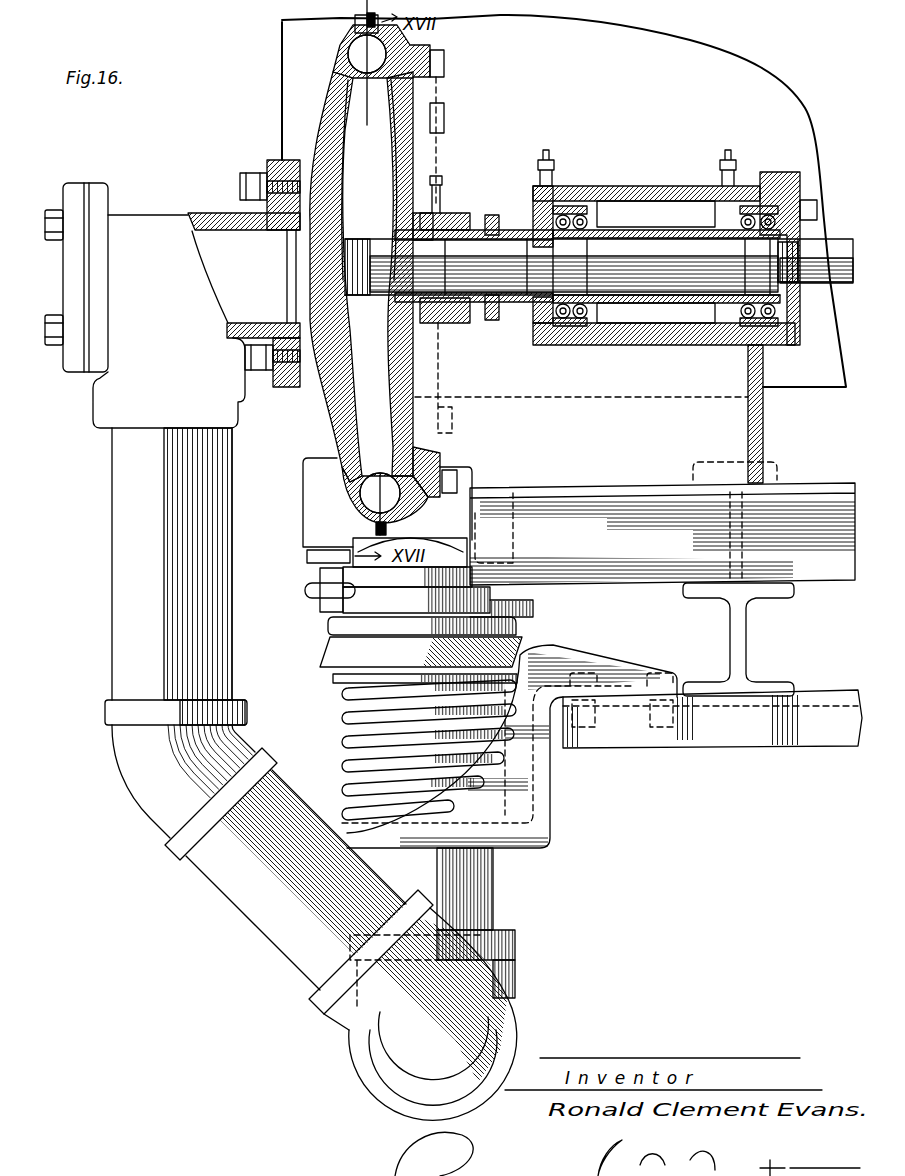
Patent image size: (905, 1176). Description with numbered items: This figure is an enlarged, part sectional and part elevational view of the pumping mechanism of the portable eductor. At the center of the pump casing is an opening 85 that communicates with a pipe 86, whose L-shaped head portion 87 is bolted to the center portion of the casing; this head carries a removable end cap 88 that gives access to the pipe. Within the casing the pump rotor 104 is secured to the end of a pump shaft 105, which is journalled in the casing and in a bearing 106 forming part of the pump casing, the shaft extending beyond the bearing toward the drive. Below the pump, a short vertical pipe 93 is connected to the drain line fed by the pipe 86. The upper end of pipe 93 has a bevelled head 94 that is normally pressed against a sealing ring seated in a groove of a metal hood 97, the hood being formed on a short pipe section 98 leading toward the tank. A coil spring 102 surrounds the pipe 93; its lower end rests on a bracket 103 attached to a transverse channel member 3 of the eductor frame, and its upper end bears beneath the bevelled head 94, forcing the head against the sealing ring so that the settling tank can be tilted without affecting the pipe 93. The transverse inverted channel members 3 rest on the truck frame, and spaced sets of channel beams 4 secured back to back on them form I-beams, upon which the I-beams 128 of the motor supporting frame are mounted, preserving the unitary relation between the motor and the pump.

The removable end cap 88 is at (75, 192).
The L-shaped head portion 87 is at (218, 217).
The opening 85 is at (300, 273).
The pipe 86 is at (133, 510).
The pump rotor 104 is at (385, 163).
The bearing 106 is at (650, 186).
The pump shaft 105 is at (494, 290).
The I-beams 128 is at (611, 513).
The channel beams 4 is at (735, 627).
The transverse inverted channel members 3 is at (726, 728).
The short pipe section 98 is at (382, 576).
The metal hood 97 is at (335, 645).
The bevelled head 94 is at (352, 666).
The coil spring 102 is at (350, 716).
The bracket 103 is at (520, 805).
The short vertical pipe 93 is at (470, 898).